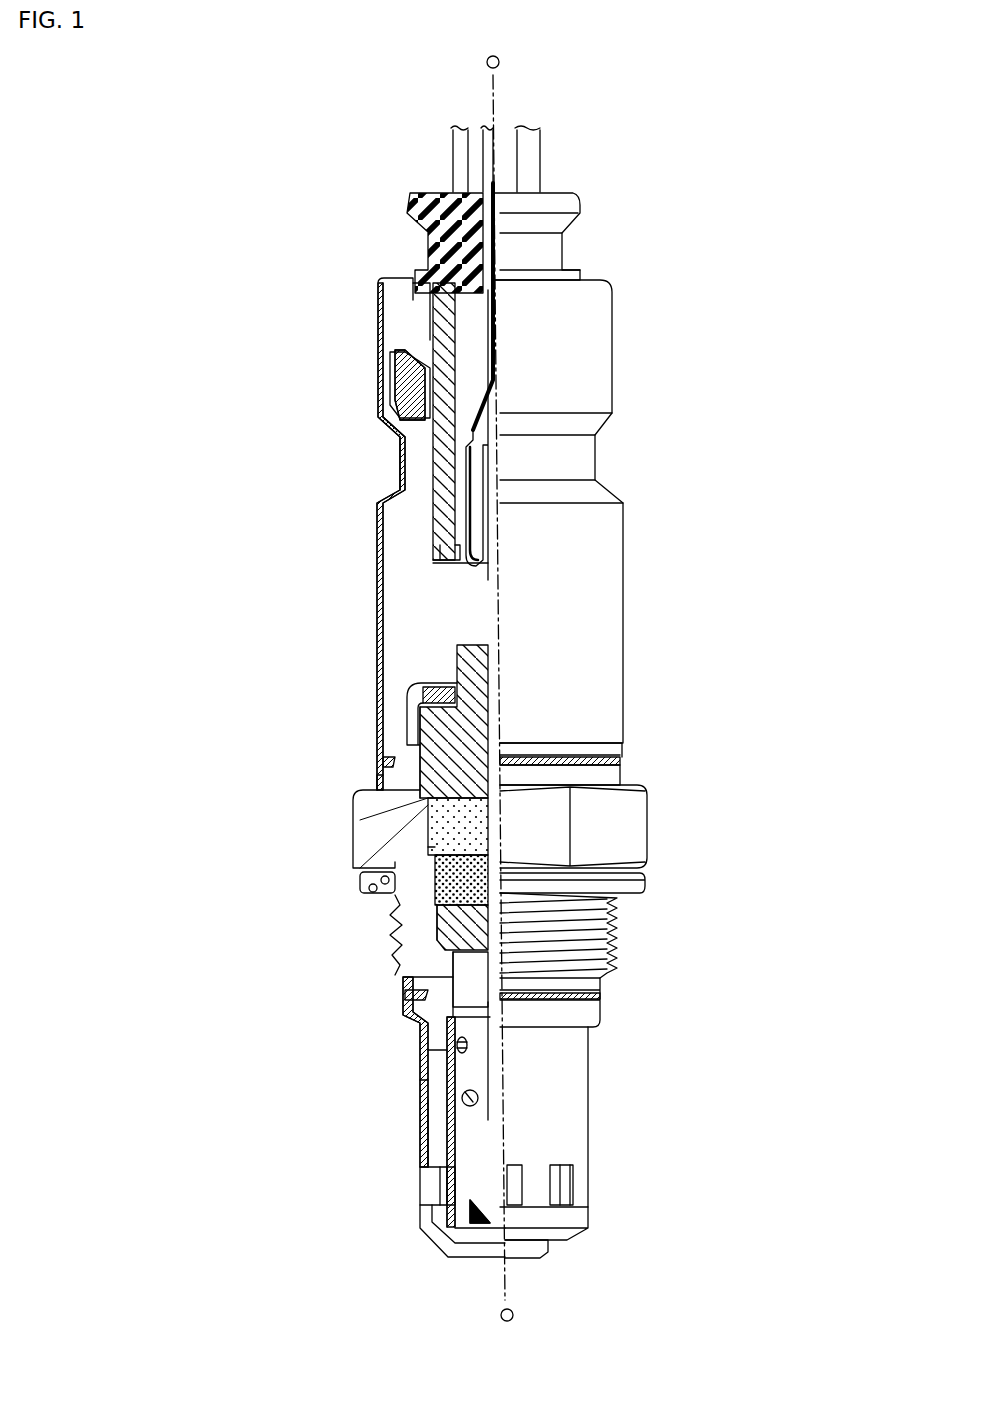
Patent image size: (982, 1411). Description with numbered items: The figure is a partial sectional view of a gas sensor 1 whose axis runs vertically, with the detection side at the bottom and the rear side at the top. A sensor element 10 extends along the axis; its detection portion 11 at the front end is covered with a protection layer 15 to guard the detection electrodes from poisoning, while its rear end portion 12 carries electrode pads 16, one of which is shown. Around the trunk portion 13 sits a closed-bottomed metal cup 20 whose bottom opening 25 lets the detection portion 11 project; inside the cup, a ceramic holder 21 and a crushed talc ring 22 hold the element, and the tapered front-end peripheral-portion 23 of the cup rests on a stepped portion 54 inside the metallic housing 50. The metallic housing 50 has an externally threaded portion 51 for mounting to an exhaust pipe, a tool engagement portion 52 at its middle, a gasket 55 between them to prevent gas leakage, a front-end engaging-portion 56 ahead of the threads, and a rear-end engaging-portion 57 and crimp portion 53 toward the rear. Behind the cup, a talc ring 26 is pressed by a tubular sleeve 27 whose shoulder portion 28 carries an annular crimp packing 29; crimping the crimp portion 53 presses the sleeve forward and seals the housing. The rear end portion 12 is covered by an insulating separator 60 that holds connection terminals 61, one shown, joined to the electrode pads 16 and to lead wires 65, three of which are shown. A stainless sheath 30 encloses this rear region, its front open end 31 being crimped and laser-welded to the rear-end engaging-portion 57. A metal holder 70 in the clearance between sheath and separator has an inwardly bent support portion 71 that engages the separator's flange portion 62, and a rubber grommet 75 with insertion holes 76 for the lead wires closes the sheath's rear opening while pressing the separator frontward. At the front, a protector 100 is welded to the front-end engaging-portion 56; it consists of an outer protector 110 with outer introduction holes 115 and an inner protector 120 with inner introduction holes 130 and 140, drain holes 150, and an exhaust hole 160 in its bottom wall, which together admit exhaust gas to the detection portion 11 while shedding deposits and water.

The gas sensor 1 is at (725, 258).
The sensor element 10 is at (445, 1020).
The detection portion 11 is at (430, 1135).
The rear end portion 12 is at (473, 572).
The trunk portion 13 is at (465, 885).
The protection layer 15 is at (425, 1080).
The electrode pads 16 is at (455, 468).
The metal cup 20 is at (455, 912).
The ceramic holder 21 is at (460, 933).
The talc ring 22 is at (375, 882).
The front-end peripheral-portion 23 is at (485, 967).
The opening 25 is at (415, 995).
The talc ring 26 is at (465, 835).
The sleeve 27 is at (447, 648).
The shoulder portion 28 is at (432, 720).
The crimp packing 29 is at (410, 702).
The sheath 30 is at (648, 500).
The front open end 31 is at (383, 778).
The metallic housing 50 is at (658, 800).
The externally threaded portion 51 is at (440, 975).
The tool engagement portion 52 is at (370, 832).
The crimp portion 53 is at (435, 692).
The stepped portion 54 is at (445, 988).
The gasket 55 is at (656, 877).
The front-end engaging-portion 56 is at (457, 1045).
The rear-end engaging-portion 57 is at (385, 761).
The separator 60 is at (424, 438).
The connection terminals 61 is at (490, 523).
The flange portion 62 is at (381, 312).
The lead wires 65 is at (525, 175).
The metal holder 70 is at (397, 344).
The support portion 71 is at (423, 387).
The grommet 75 is at (418, 160).
The insertion holes 76 is at (445, 266).
The protector 100 is at (703, 1238).
The outer protector 110 is at (600, 1220).
The outer introduction holes 115 is at (575, 1168).
The inner protector 120 is at (560, 1260).
The inner introduction holes 130 is at (440, 1058).
The inner introduction holes 140 is at (452, 1100).
The drain holes 150 is at (440, 1188).
The exhaust hole 160 is at (480, 1257).